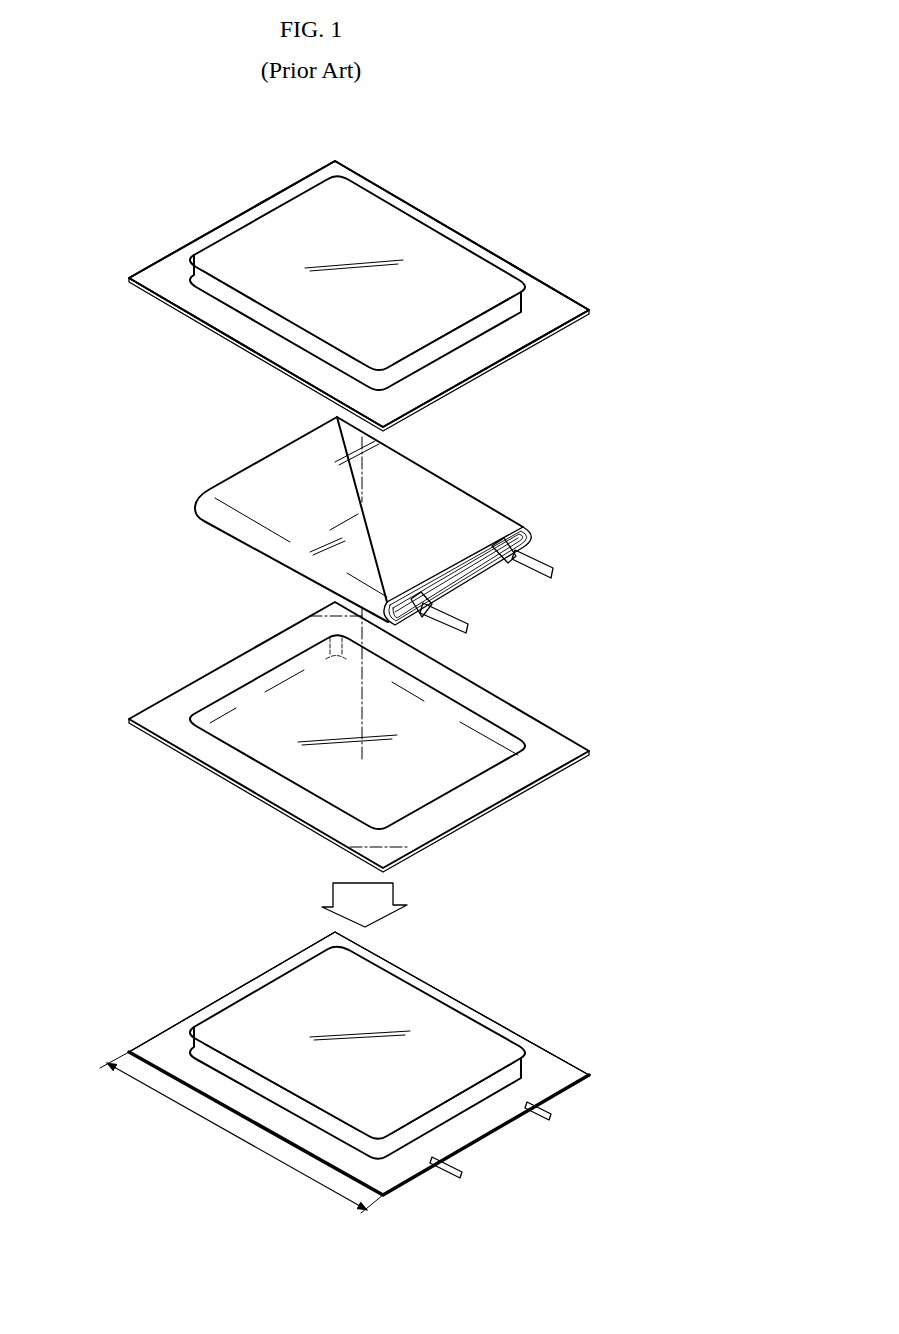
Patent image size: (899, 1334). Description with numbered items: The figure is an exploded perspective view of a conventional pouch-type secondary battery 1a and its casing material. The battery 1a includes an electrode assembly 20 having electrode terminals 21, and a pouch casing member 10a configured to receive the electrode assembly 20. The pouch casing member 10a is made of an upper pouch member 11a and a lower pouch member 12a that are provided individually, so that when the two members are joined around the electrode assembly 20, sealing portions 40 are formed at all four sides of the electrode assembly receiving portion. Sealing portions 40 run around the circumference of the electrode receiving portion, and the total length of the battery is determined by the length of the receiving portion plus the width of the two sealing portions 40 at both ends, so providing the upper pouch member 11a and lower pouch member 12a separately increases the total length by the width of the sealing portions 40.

The pouch-type secondary battery 1a is at (88, 171).
The pouch casing member 10a is at (74, 434).
The upper pouch member 11a is at (165, 304).
The lower pouch member 12a is at (163, 692).
The electrode assembly 20 is at (399, 535).
The electrode terminals 21 is at (557, 574).
The sealing portions 40 is at (542, 288).